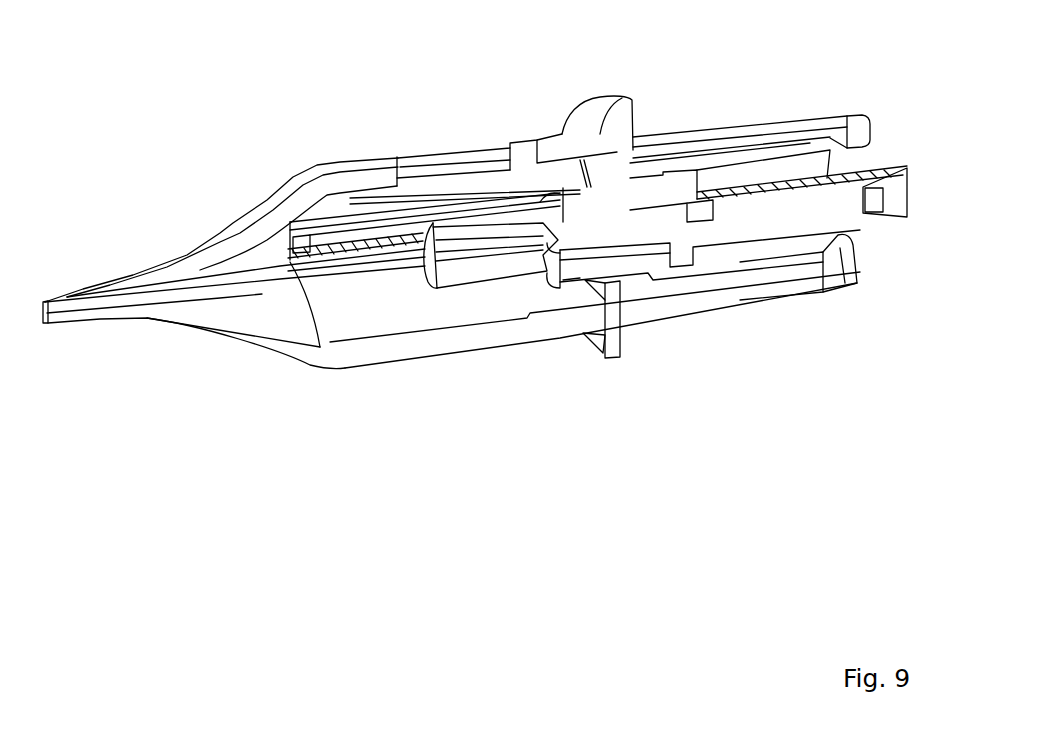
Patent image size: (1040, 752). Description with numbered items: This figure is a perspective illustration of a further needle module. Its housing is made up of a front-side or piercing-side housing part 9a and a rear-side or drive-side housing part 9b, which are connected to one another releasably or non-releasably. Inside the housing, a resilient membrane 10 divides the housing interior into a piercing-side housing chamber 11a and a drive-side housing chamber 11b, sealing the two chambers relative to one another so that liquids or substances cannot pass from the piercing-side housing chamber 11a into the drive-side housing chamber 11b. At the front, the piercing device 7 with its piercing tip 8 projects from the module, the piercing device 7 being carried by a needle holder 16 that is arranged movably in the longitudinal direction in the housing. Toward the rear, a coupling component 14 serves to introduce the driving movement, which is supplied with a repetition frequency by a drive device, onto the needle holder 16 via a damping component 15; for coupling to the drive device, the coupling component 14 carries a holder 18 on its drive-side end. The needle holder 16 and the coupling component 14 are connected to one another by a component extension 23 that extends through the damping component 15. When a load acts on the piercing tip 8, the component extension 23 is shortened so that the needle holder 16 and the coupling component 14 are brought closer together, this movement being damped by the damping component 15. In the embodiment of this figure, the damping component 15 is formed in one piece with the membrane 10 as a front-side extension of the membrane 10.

The piercing device 7 is at (262, 275).
The piercing tip 8 is at (148, 292).
The front-side housing part 9a is at (360, 160).
The rear-side housing part 9b is at (730, 137).
The resilient membrane 10 is at (747, 268).
The piercing-side housing chamber 11a is at (385, 315).
The drive-side housing chamber 11b is at (800, 253).
The coupling component 14 is at (840, 202).
The damping component 15 is at (630, 268).
The needle holder 16 is at (465, 228).
The holder 18 is at (883, 200).
The component extension 23 is at (588, 267).